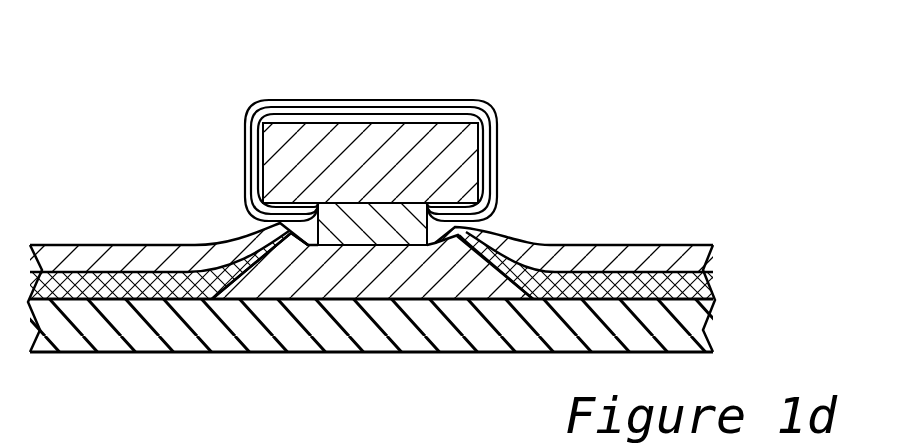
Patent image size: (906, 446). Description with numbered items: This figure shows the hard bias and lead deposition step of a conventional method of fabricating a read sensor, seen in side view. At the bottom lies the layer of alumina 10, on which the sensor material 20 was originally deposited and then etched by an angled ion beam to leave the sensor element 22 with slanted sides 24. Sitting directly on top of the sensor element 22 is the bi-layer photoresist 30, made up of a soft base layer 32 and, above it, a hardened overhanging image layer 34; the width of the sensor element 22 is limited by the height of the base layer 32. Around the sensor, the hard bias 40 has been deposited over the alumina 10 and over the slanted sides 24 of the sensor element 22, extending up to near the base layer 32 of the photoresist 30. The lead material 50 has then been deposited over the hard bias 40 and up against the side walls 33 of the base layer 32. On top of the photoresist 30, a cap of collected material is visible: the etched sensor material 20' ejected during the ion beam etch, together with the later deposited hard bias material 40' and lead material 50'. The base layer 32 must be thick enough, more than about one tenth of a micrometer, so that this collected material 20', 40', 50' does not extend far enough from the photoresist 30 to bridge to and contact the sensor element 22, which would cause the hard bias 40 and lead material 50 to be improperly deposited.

The alumina 10 is at (81, 340).
The sensor material 20 is at (372, 326).
The sensor element 22 is at (452, 270).
The slanted sides 24 is at (517, 281).
The bi-layer photoresist 30 is at (438, 129).
The base layer 32 is at (392, 226).
The side walls 33 is at (291, 238).
The image layer 34 is at (467, 153).
The hard bias 40 is at (371, 299).
The lead material 50 is at (371, 226).
The etched sensor material 20' is at (370, 125).
The deposited hard bias material 40' is at (370, 113).
The deposited lead material 50' is at (371, 117).